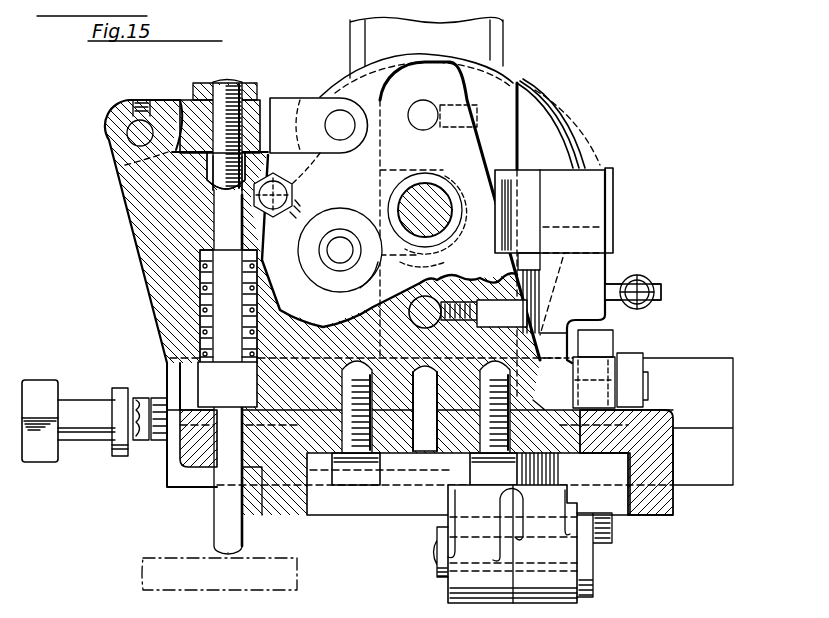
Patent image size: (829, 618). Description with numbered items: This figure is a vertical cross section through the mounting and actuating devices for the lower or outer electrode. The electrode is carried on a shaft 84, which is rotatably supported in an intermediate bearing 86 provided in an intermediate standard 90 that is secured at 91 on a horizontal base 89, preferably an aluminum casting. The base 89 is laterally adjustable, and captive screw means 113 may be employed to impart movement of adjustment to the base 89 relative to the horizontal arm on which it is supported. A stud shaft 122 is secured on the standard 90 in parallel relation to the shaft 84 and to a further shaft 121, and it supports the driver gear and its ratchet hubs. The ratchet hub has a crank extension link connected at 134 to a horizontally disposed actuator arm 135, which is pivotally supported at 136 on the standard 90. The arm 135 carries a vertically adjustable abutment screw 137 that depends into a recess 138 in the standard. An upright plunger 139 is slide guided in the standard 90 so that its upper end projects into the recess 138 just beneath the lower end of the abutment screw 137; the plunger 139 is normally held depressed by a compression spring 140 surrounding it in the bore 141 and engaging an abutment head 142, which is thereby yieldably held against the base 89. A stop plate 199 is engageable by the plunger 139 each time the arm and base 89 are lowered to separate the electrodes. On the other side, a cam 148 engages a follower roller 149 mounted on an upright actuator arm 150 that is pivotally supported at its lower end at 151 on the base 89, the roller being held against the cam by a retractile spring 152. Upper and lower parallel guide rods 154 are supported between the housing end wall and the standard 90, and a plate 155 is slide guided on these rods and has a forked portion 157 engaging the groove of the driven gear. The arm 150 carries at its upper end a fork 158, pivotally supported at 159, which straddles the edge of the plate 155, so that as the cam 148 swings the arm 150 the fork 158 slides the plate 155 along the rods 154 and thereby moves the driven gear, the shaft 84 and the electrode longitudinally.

The shaft 84 is at (437, 195).
The intermediate bearing 86 is at (418, 175).
The horizontal base 89 is at (648, 497).
The intermediate standard 90 is at (150, 250).
The securing means 91 is at (472, 462).
The captive screw means 113 is at (74, 397).
The shaft 121 is at (338, 236).
The stud shaft 122 is at (286, 192).
The link connection 134 is at (318, 103).
The actuator arm 135 is at (272, 98).
The pivot 136 is at (132, 135).
The abutment screw 137 is at (236, 82).
The recess 138 is at (205, 180).
The plunger 139 is at (223, 277).
The compression spring 140 is at (205, 318).
The bore 141 is at (196, 344).
The abutment head 142 is at (182, 438).
The cam 148 is at (602, 338).
The follower roller 149 is at (607, 365).
The upright actuator arm 150 is at (565, 490).
The pivot 151 is at (555, 560).
The retractile spring 152 is at (650, 280).
The guide rods 154 is at (425, 105).
The plate 155 is at (497, 90).
The forked portion 157 is at (425, 262).
The fork 158 is at (560, 162).
The pivot 159 is at (616, 182).
The stop plate 199 is at (185, 565).